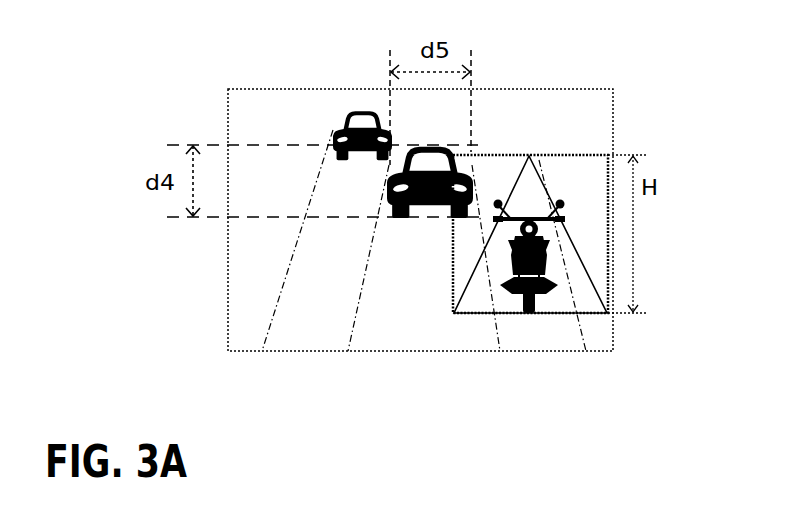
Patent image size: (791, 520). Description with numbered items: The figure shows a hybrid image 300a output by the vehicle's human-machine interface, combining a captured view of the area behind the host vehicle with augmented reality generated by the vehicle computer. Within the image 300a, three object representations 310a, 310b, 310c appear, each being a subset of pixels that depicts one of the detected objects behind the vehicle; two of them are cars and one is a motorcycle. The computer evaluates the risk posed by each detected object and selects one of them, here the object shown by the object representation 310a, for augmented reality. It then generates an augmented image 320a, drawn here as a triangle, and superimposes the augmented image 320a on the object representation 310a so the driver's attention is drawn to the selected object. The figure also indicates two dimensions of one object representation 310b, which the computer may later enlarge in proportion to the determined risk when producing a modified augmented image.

The hybrid image 300a is at (491, 88).
The object representation 310a is at (545, 247).
The object representation 310b is at (438, 210).
The object representation 310c is at (335, 127).
The augmented image 320a is at (547, 316).